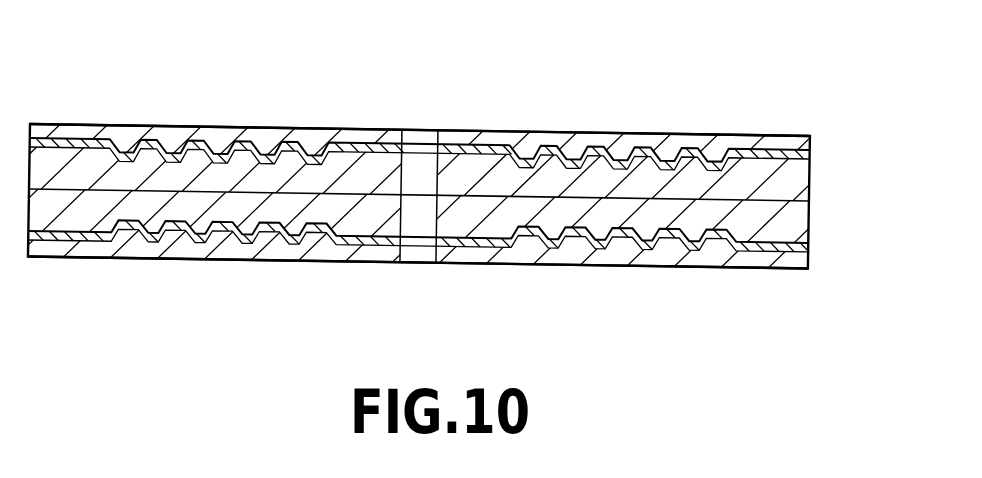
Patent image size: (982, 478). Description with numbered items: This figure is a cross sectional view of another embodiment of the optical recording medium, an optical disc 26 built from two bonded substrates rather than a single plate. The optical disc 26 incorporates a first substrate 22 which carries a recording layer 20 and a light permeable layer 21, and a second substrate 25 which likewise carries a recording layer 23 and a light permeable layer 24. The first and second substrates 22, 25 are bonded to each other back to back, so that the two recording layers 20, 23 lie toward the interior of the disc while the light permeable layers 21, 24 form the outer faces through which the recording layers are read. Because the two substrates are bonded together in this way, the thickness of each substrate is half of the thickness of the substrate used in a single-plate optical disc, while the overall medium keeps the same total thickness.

The recording layer 20 is at (798, 154).
The light permeable layer 21 is at (798, 143).
The first substrate 22 is at (798, 183).
The recording layer 23 is at (798, 245).
The light permeable layer 24 is at (798, 262).
The second substrate 25 is at (798, 213).
The optical disc 26 is at (703, 114).